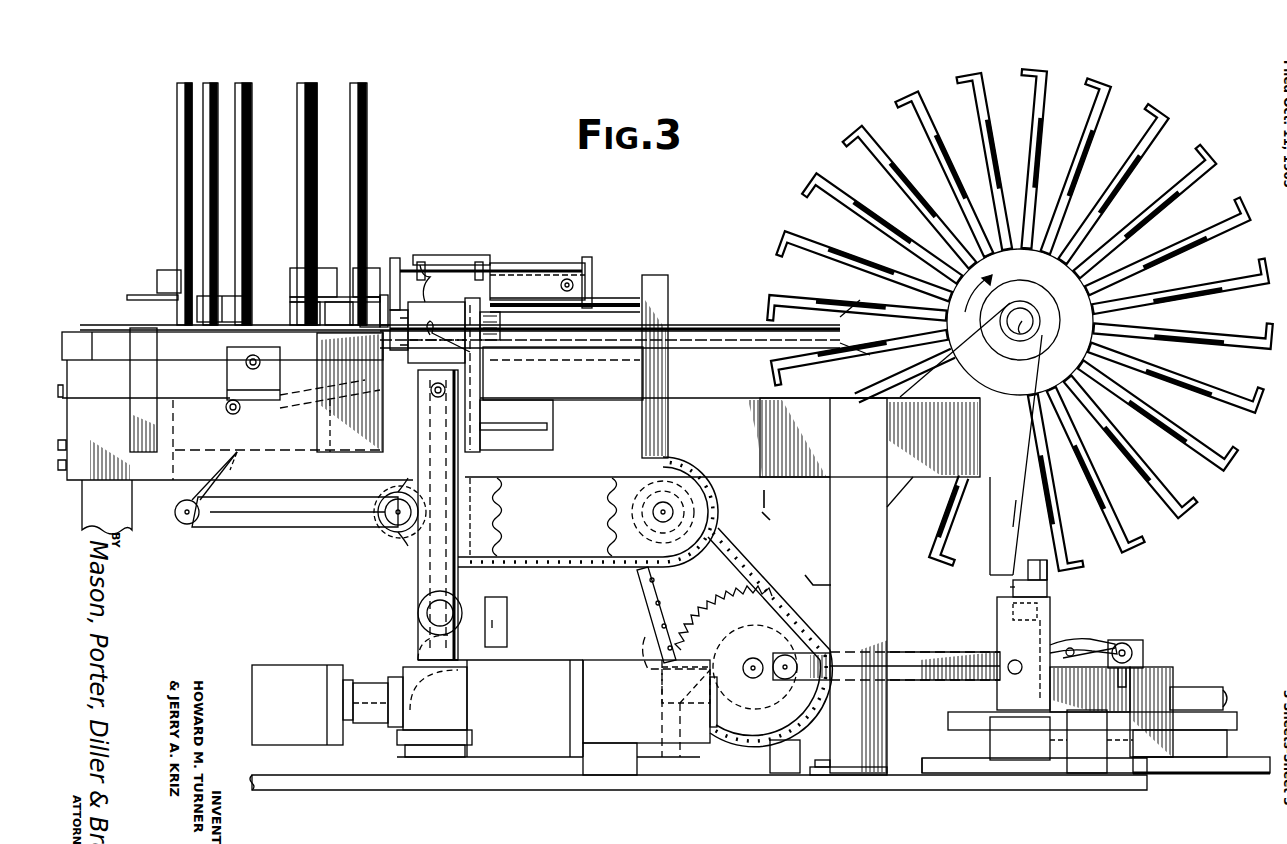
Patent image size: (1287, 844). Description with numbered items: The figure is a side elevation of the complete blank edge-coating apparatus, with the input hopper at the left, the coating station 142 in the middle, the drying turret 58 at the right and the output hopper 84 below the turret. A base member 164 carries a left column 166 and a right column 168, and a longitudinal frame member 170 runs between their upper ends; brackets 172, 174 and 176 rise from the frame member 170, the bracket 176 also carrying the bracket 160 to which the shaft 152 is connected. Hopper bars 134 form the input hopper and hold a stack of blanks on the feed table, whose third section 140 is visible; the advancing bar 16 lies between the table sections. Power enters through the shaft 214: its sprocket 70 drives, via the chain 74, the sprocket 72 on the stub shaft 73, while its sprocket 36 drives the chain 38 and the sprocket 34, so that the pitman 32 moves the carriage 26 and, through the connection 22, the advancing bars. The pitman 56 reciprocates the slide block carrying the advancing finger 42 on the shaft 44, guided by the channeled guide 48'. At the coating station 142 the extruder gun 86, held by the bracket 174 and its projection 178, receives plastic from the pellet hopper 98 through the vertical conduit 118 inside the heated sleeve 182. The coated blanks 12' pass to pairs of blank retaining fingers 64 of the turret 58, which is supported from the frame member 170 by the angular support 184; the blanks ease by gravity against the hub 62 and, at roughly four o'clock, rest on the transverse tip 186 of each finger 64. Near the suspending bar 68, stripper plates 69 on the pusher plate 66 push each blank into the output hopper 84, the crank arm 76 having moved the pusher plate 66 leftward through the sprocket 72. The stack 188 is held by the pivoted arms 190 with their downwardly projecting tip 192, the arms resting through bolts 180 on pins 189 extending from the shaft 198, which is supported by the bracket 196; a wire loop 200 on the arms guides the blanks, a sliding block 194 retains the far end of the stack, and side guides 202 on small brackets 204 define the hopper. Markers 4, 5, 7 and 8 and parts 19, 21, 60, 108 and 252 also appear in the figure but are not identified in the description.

The section line 4- 4 is at (58, 387).
The section line 5- 5 is at (388, 256).
The section line 7- 7 is at (405, 262).
The section line 8- 8 is at (492, 750).
The coated blank 12' is at (979, 336).
The advancing bar 16 is at (177, 337).
The drive shaft 19 is at (832, 635).
The shaft bracket 21 is at (648, 657).
The connection 22 is at (227, 372).
The carriage 26 is at (255, 457).
The pitman 32 is at (245, 530).
The sprocket 34 is at (504, 500).
The sprocket 36 is at (610, 488).
The chain 38 is at (563, 547).
The advancing finger 42 is at (450, 295).
The shaft 44 is at (493, 360).
The channeled guide 48' is at (610, 362).
The pitman 56 is at (305, 393).
The drying turret 58 is at (1207, 143).
The hub 60 is at (1017, 333).
The hub 62 is at (913, 295).
The blank retaining finger 64 is at (976, 102).
The pusher plate 66 is at (993, 637).
The suspending bar 68 is at (1013, 527).
The stripper plate 69 is at (1043, 563).
The sprocket 70 is at (623, 535).
The sprocket 72 is at (726, 588).
The stub shaft 73 is at (752, 673).
The chain 74 is at (647, 583).
The crank arm 76 is at (933, 652).
The output hopper 84 is at (1200, 640).
The extruder gun 86 is at (422, 297).
The pellet hopper 98 is at (507, 617).
The motor 108 is at (300, 663).
The vertical conduit 118 is at (407, 583).
The hopper bar 134 is at (182, 222).
The third section 140 is at (277, 323).
The coating station 142 is at (500, 317).
The shaft 152 is at (563, 280).
The bracket 160 is at (616, 275).
The base member 164 is at (311, 778).
The column 166 is at (106, 507).
The column 168 is at (892, 540).
The longitudinal frame member 170 is at (748, 430).
The bracket 172 is at (130, 365).
The bracket 174 is at (473, 411).
The bracket 176 is at (670, 387).
The projection 178 is at (557, 437).
The bolt 180 is at (1027, 650).
The sleeve 182 is at (460, 460).
The angular support 184 is at (983, 392).
The transverse tip 186 is at (1260, 340).
The stack 188 is at (1160, 667).
The pin 189 is at (1125, 640).
The pivoted arm 190 is at (1097, 650).
The downwardly projecting tip 192 is at (1037, 670).
The sliding block 194 is at (1215, 681).
The bracket 196 is at (1133, 740).
The shaft 198 is at (1140, 640).
The wire loop 200 is at (1052, 643).
The side guide 202 is at (947, 727).
The small bracket 204 is at (1063, 747).
The shaft 214 is at (663, 512).
The pivot roller 252 is at (181, 503).